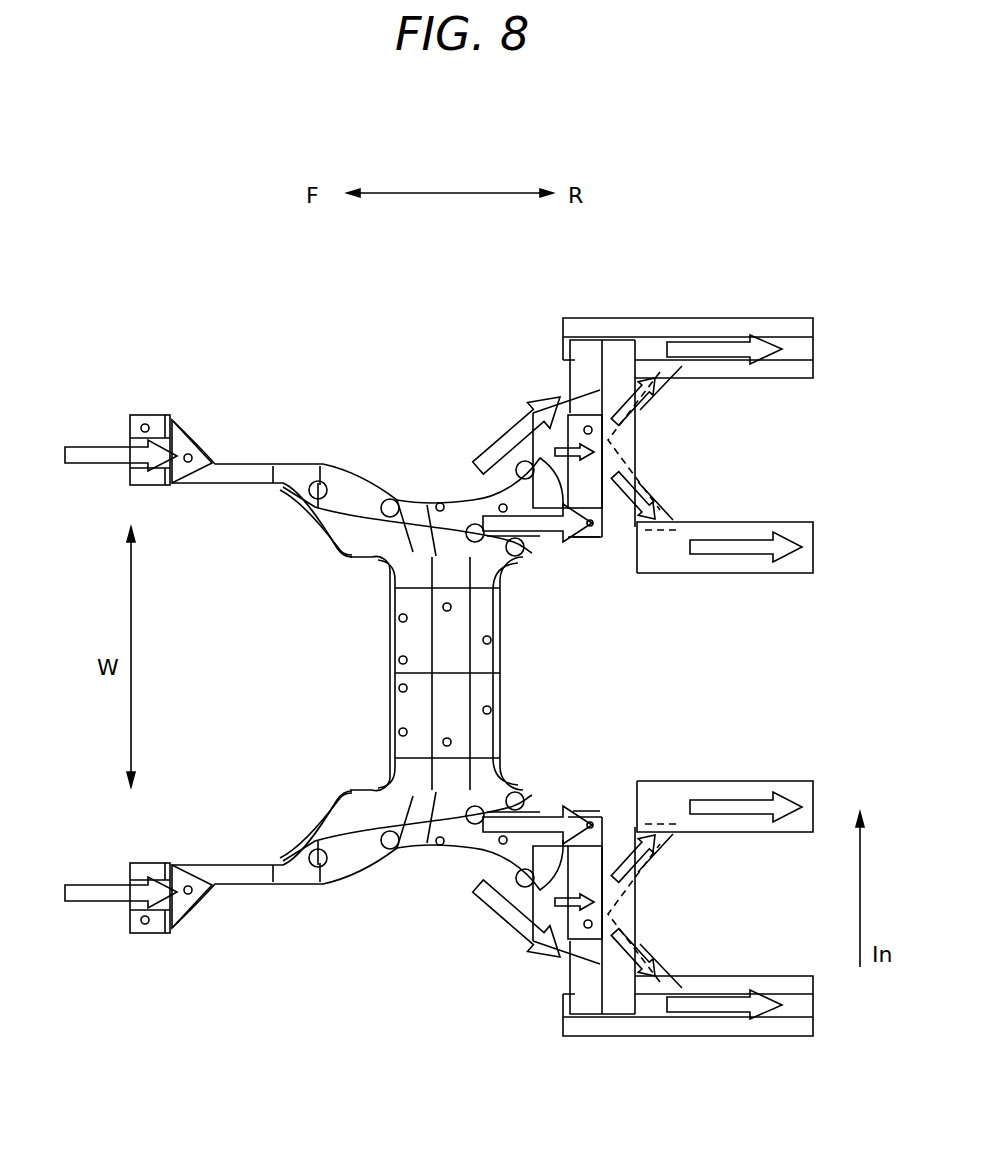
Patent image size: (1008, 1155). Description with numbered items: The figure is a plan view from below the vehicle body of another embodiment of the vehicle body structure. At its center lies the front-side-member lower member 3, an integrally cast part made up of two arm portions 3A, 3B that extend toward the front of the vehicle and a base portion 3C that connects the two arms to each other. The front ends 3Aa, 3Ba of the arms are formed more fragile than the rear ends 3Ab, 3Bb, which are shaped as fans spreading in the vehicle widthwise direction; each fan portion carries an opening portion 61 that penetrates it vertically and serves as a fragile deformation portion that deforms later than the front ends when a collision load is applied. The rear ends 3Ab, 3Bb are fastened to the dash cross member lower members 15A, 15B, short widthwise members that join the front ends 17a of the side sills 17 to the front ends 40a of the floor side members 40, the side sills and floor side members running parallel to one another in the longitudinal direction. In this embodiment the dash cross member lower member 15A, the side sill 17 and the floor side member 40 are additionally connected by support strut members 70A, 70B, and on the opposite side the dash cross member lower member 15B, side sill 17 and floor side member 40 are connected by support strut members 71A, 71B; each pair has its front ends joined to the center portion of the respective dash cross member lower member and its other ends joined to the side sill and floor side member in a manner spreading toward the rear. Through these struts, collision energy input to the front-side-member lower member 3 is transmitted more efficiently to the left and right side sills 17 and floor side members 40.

The front-side-member lower member 3 is at (378, 687).
The arm portion 3A is at (365, 542).
The arm portion 3B is at (337, 805).
The base portion 3C is at (483, 665).
The front end 3Aa is at (160, 417).
The front end 3Ba is at (160, 918).
The rear end 3Ab is at (530, 540).
The rear end 3Bb is at (540, 818).
The dash cross member lower member 15A is at (627, 445).
The dash cross member lower member 15B is at (628, 903).
The side sill 17 is at (788, 330).
The front end of side sill 17a is at (595, 333).
The floor side member 40 is at (776, 566).
The front end of floor side member 40a is at (655, 560).
The opening portion 61 is at (545, 455).
The support strut member 70A is at (660, 393).
The support strut member 70B is at (655, 490).
The support strut member 71A is at (652, 932).
The support strut member 71B is at (651, 848).